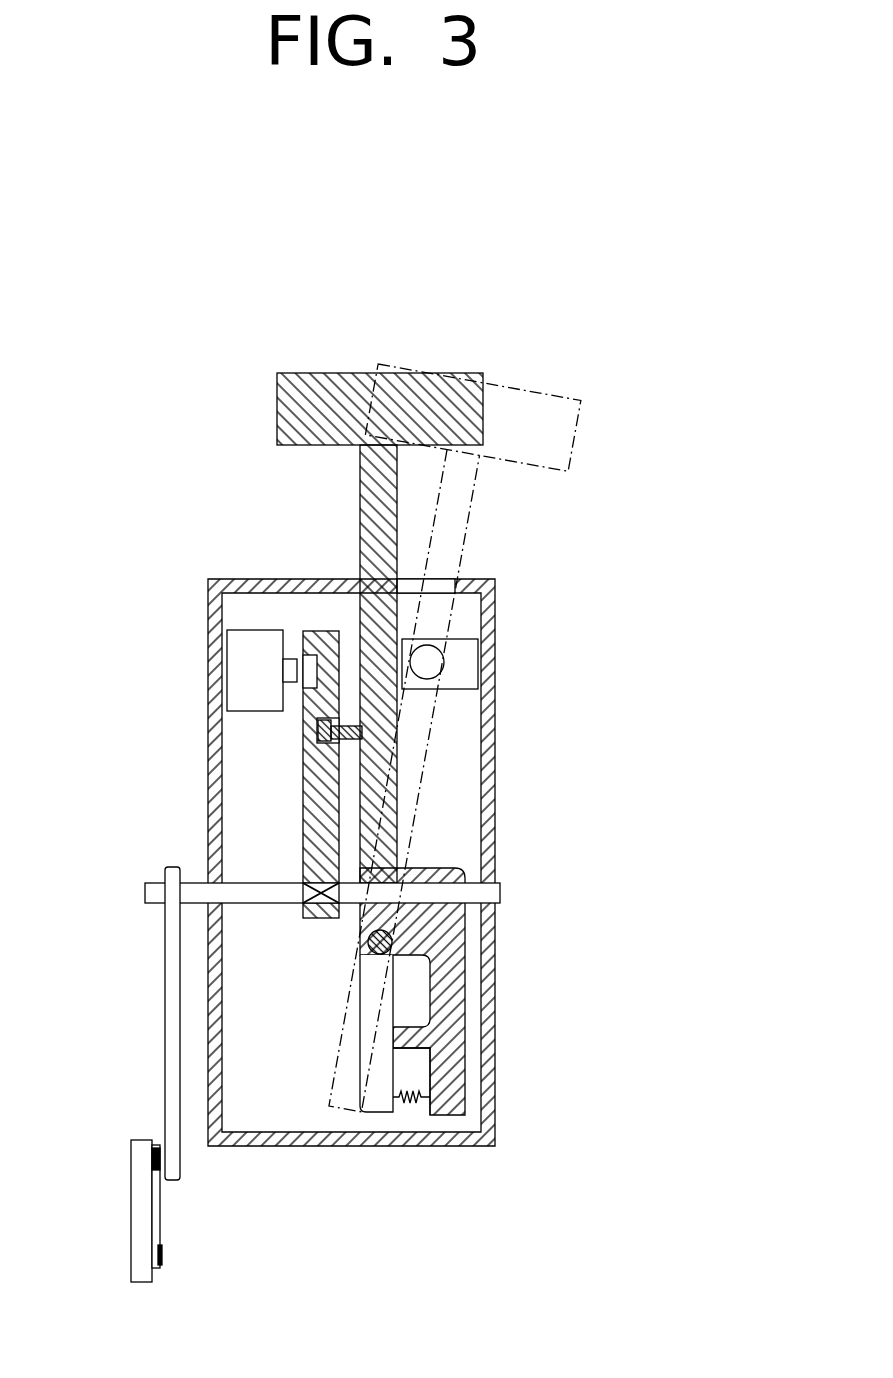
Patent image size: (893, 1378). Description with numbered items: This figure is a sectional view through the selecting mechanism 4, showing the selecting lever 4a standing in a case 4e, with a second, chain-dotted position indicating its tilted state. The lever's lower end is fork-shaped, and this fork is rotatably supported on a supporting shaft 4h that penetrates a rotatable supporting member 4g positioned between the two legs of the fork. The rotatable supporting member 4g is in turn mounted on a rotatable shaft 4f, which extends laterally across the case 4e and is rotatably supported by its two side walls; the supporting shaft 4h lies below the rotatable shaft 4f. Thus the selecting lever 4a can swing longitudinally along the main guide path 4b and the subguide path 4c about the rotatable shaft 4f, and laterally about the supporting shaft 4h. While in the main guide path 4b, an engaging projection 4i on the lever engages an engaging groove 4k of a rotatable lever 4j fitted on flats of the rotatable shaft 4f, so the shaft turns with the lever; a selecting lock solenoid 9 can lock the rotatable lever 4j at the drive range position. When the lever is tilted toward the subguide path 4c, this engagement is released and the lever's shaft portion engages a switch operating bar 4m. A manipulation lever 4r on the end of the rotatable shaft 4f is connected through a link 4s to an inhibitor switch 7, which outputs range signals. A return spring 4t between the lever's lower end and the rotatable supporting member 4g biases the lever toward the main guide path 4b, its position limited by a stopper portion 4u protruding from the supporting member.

The selecting mechanism 4 is at (363, 756).
The selecting lever 4a is at (287, 372).
The main guide path 4b is at (360, 580).
The subguide path 4c is at (460, 580).
The case 4e is at (495, 748).
The rotatable shaft 4f is at (500, 888).
The rotatable supporting member 4g is at (460, 968).
The supporting shaft 4h is at (360, 945).
The engaging projection 4i is at (340, 748).
The rotatable lever 4j is at (303, 818).
The engaging groove 4k is at (317, 730).
The switch operating bar 4m is at (444, 662).
The manipulation lever 4r is at (172, 1003).
The link 4s is at (158, 1147).
The return spring 4t is at (413, 1097).
The stopper portion 4u is at (430, 1067).
The inhibitor switch 7 is at (135, 1225).
The selecting lock solenoid 9 is at (245, 668).